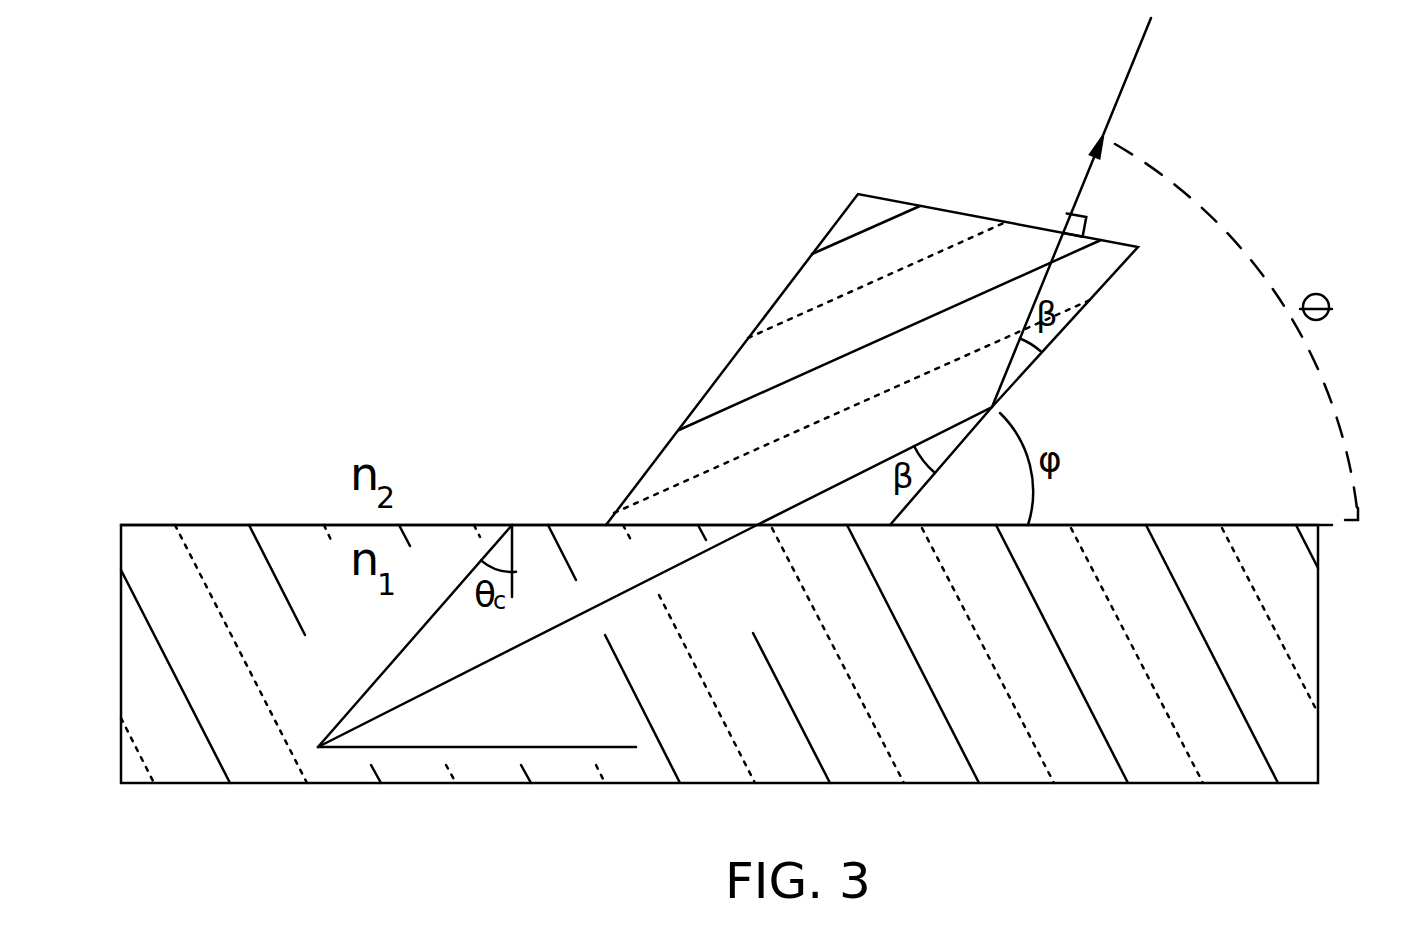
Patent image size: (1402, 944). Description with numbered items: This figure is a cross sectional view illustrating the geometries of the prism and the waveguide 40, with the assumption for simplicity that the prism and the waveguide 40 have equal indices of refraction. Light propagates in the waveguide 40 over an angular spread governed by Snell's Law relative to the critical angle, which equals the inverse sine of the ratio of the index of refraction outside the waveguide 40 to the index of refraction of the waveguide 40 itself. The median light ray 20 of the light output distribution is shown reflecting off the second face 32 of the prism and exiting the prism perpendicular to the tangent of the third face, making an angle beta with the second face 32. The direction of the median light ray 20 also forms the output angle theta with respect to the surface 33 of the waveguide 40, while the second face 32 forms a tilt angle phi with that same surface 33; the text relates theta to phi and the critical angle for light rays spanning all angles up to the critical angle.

The median light ray 20 is at (685, 563).
The second face 32 is at (1102, 287).
The surface of waveguide 33 is at (1150, 525).
The waveguide 40 is at (1318, 717).